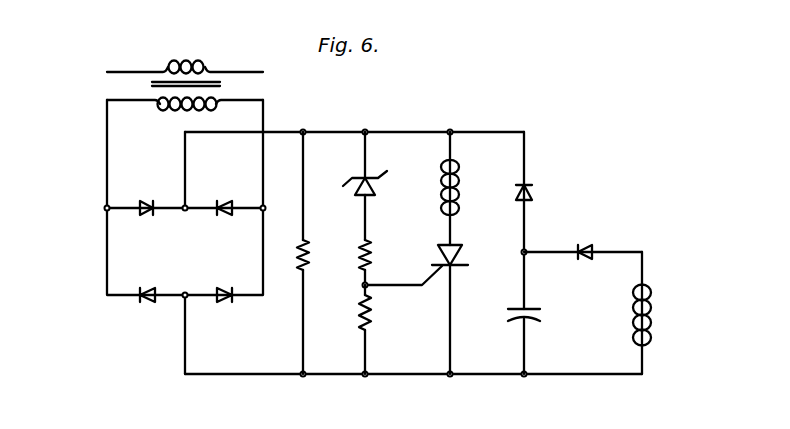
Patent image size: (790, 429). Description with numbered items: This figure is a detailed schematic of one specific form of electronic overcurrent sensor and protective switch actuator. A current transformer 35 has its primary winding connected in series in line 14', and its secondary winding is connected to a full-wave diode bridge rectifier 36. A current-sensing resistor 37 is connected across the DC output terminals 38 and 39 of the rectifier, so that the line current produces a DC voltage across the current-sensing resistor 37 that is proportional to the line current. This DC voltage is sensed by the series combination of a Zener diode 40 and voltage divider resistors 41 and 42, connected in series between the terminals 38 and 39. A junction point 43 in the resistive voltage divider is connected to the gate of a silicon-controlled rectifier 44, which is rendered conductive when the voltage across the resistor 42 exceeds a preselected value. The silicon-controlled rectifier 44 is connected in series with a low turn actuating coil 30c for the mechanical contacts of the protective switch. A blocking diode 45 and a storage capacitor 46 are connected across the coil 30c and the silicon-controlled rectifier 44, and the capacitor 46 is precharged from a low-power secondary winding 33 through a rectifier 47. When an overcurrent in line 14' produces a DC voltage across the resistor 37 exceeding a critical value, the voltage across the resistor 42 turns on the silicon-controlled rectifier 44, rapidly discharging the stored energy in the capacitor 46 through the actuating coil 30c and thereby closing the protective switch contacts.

The line 14' is at (185, 56).
The current transformer 35 is at (152, 85).
The full-wave diode bridge rectifier 36 is at (196, 258).
The current-sensing resistor 37 is at (298, 263).
The DC output terminal 38 is at (285, 131).
The DC output terminal 39 is at (274, 375).
The Zener diode 40 is at (357, 173).
The voltage divider resistor 41 is at (371, 250).
The voltage divider resistor 42 is at (371, 318).
The junction point 43 is at (360, 286).
The silicon-controlled rectifier 44 is at (455, 250).
The low turn actuating coil 30c is at (456, 180).
The blocking diode 45 is at (532, 182).
The storage capacitor 46 is at (528, 309).
The rectifier 47 is at (588, 250).
The low-power secondary winding 33 is at (650, 309).